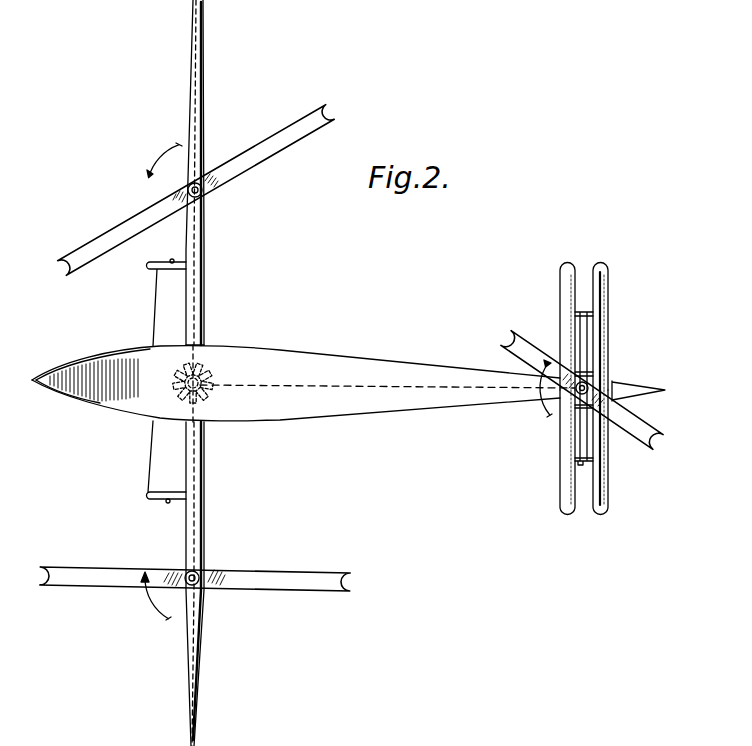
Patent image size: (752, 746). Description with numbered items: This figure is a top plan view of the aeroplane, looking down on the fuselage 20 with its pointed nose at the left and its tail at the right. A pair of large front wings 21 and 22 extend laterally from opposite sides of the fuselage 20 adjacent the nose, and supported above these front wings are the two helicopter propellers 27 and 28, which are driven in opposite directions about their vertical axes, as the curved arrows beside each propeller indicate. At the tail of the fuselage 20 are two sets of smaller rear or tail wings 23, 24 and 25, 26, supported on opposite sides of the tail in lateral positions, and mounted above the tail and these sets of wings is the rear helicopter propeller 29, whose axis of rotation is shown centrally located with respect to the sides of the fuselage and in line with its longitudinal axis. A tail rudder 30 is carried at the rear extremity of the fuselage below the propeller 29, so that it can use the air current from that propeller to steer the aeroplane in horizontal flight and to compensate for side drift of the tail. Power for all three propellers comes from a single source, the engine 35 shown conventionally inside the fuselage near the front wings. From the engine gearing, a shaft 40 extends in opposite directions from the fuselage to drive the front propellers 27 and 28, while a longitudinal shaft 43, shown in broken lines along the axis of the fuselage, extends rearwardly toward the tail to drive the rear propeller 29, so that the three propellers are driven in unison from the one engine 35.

The fuselage 20 is at (342, 363).
The front wing 21 is at (202, 115).
The front wing 22 is at (200, 487).
The rear wing 23 is at (568, 260).
The rear wing 24 is at (602, 263).
The rear wing 25 is at (565, 497).
The rear wing 26 is at (607, 502).
The helicopter propeller 27 is at (250, 162).
The helicopter propeller 28 is at (195, 576).
The rear helicopter propeller 29 is at (517, 340).
The tail rudder 30 is at (645, 383).
The engine 35 is at (212, 402).
The shaft 40 is at (203, 348).
The longitudinal shaft 43 is at (382, 390).